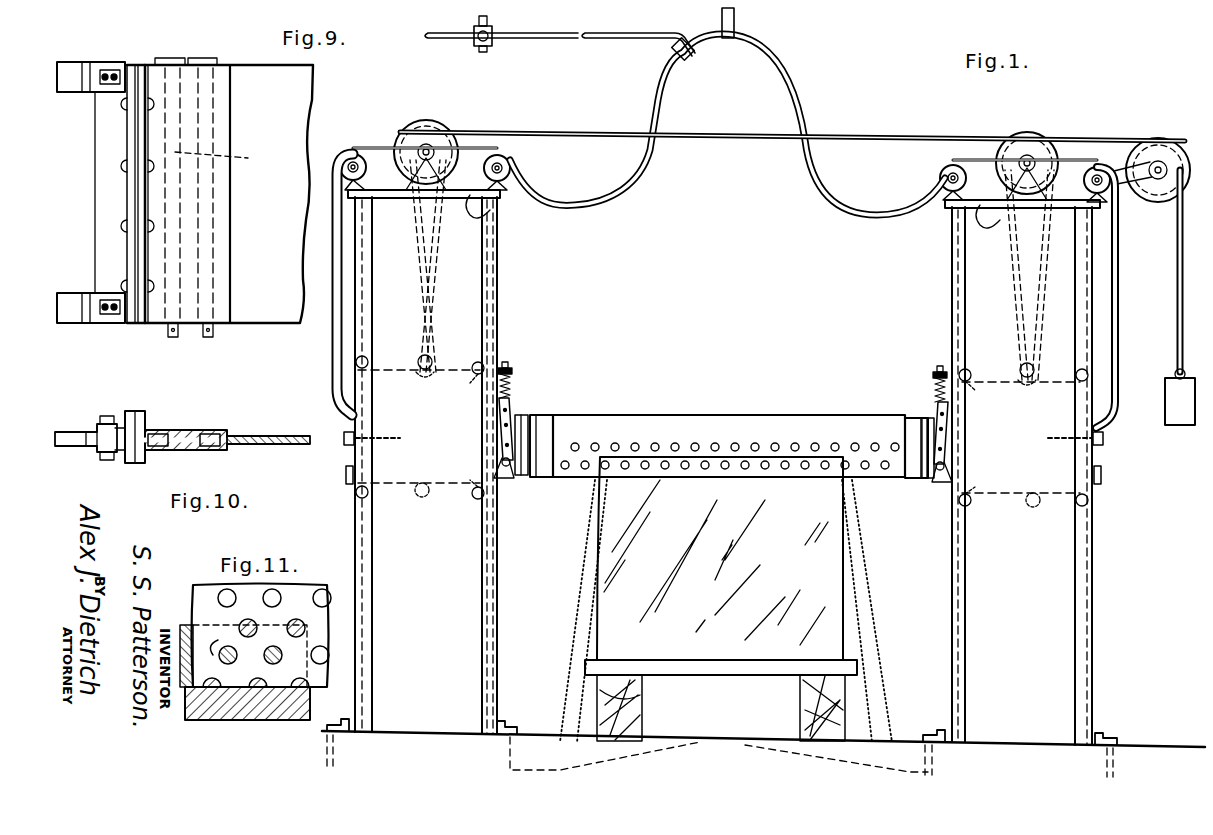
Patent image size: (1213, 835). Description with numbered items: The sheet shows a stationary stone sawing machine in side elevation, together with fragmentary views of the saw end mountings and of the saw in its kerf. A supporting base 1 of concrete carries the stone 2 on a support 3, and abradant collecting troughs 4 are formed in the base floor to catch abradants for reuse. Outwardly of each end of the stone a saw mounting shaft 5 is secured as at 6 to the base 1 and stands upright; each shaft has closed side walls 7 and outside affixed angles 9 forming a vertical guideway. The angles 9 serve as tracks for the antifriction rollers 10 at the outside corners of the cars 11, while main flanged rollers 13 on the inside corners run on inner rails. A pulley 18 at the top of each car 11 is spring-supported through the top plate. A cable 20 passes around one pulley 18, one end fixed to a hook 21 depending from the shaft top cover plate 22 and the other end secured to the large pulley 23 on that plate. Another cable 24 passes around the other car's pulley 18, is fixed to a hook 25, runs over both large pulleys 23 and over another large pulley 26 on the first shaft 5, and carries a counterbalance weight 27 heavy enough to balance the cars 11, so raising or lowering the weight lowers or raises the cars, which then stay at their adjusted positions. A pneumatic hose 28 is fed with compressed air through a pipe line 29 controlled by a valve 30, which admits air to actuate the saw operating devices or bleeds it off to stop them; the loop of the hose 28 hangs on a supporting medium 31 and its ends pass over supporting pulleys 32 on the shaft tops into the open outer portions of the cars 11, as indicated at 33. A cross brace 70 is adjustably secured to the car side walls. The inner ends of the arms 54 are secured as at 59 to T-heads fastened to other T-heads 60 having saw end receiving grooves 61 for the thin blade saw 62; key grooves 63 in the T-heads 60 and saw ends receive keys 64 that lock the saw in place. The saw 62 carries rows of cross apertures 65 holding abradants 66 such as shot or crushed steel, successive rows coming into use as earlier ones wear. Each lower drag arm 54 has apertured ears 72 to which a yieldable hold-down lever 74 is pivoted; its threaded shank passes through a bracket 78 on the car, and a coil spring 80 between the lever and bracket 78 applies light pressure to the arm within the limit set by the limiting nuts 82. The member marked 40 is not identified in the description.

In FIG. 1, the supporting base 1 is at (430, 742).
In FIG. 1, the stone 2 is at (600, 525).
In FIG. 1, the support 3 is at (643, 695).
In FIG. 1, the abradant collecting troughs 4 is at (525, 768).
In FIG. 1, the saw mounting shaft 5 is at (508, 302).
In FIG. 1, the shaft securing means 6 is at (345, 728).
In FIG. 1, the closed side walls 7 is at (485, 590).
In FIG. 1, the outside affixed angles 9 is at (368, 585).
In FIG. 1, the antifriction rollers 10 is at (368, 360).
In FIG. 1, the cars 11 is at (432, 368).
In FIG. 1, the main flanged rollers 13 is at (478, 356).
In FIG. 1, the pulley 18 is at (719, 431).
In FIG. 1, the cable 20 is at (1008, 318).
In FIG. 1, the hook 21 is at (1045, 215).
In FIG. 1, the shaft top cover plate 22 is at (490, 215).
In FIG. 1, the large pulley 23 is at (440, 135).
In FIG. 1, the cable 24 is at (438, 295).
In FIG. 1, the hook 25 is at (440, 208).
In FIG. 1, the large pulley 26 is at (1170, 145).
In FIG. 1, the counterbalance weight 27 is at (1166, 398).
In FIG. 1, the pneumatic hose 28 is at (803, 108).
In FIG. 1, the pipe line 29 is at (590, 40).
In FIG. 1, the valve 30 is at (495, 30).
In FIG. 1, the supporting medium 31 is at (735, 22).
In FIG. 1, the supporting pulleys 32 is at (362, 160).
In FIG. 1, the hose ends 33 is at (345, 413).
In FIG. 1, the bracket 40 is at (346, 480).
In FIG. 1, the arms 54 is at (530, 422).
In FIG. 9, the arms 54 is at (68, 62).
In FIG. 10, the arms 54 is at (70, 452).
In FIG. 9, the securing means 59 is at (108, 70).
In FIG. 10, the securing means 59 is at (106, 416).
In FIG. 1, the T-heads 60 is at (548, 440).
In FIG. 9, the T-heads 60 is at (133, 213).
In FIG. 10, the T-heads 60 is at (128, 462).
In FIG. 10, the saw end receiving grooves 61 is at (165, 432).
In FIG. 1, the thin blade saw 62 is at (705, 430).
In FIG. 9, the thin blade saw 62 is at (253, 322).
In FIG. 10, the thin blade saw 62 is at (275, 437).
In FIG. 11, the thin blade saw 62 is at (200, 590).
In FIG. 10, the key grooves 63 is at (212, 432).
In FIG. 9, the keys 64 is at (223, 159).
In FIG. 10, the keys 64 is at (190, 451).
In FIG. 1, the cross apertures 65 is at (815, 447).
In FIG. 11, the cross apertures 65 is at (262, 622).
In FIG. 11, the abradants 66 is at (220, 640).
In FIG. 1, the cross brace 70 is at (346, 448).
In FIG. 1, the apertured ears 72 is at (498, 462).
In FIG. 1, the yieldable hold-down lever 74 is at (500, 428).
In FIG. 1, the bracket 78 is at (514, 372).
In FIG. 1, the coil spring 80 is at (512, 392).
In FIG. 1, the limiting nuts 82 is at (506, 372).